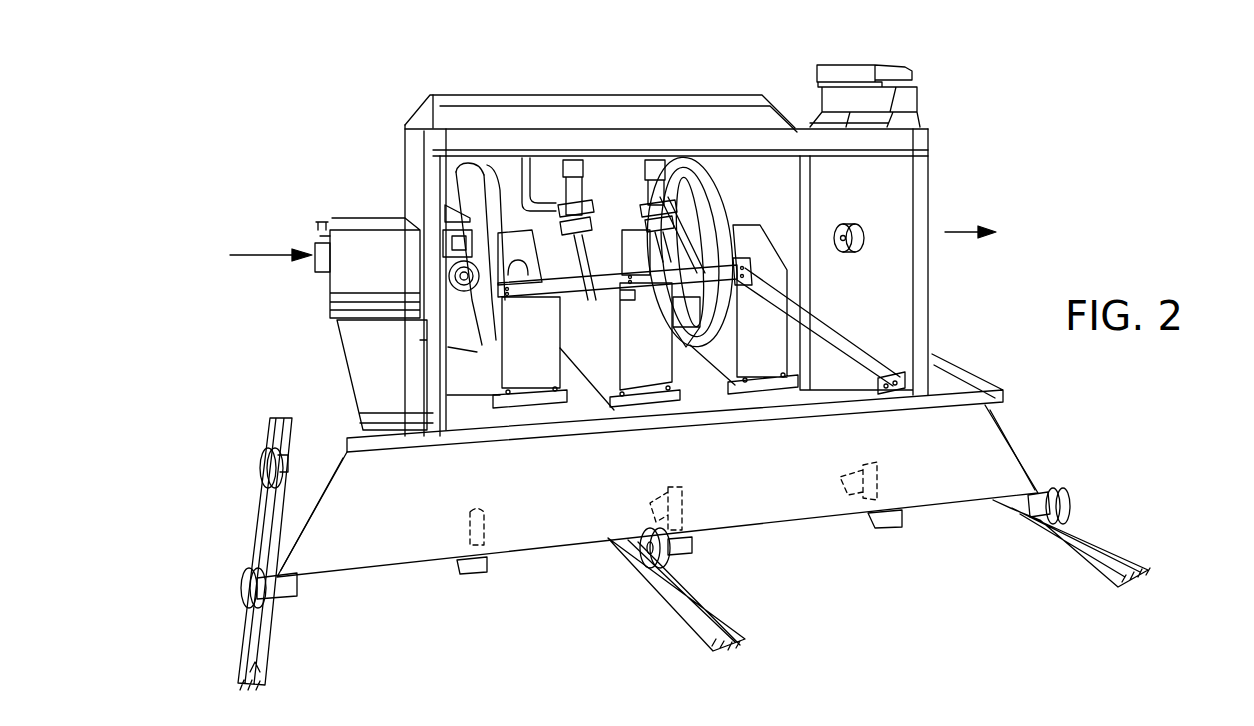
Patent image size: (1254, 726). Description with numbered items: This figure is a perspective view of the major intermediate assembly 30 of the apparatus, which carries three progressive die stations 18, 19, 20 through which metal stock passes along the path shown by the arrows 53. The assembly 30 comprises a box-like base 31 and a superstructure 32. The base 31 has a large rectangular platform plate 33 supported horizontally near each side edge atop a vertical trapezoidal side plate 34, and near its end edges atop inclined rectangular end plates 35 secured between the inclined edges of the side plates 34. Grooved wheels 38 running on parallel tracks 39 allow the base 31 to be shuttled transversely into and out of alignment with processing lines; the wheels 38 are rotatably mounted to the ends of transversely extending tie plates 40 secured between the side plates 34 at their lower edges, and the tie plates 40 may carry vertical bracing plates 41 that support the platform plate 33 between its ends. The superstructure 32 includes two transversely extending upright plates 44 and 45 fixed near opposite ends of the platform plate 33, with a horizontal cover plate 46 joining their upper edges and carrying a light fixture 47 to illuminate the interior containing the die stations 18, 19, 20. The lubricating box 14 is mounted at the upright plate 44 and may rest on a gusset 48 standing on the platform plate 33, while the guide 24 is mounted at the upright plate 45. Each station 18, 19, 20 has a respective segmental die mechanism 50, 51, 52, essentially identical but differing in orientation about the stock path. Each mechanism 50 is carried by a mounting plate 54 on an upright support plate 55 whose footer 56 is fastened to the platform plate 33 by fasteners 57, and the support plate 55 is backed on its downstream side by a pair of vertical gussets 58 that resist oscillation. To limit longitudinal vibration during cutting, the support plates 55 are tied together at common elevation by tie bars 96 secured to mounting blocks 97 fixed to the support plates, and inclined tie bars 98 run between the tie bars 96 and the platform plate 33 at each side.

The lubricating box 14 is at (345, 218).
The progressive die station 18 is at (448, 167).
The progressive die station 19 is at (551, 175).
The progressive die station 20 is at (641, 172).
The guide 24 is at (846, 252).
The assembly 30 is at (341, 80).
The base 31 is at (415, 561).
The superstructure 32 is at (406, 150).
The platform plate 33 is at (947, 377).
The side plate 34 is at (954, 497).
The end plate 35 is at (323, 423).
The grooved wheel 38 is at (263, 465).
The track 39 is at (262, 532).
The tie plate 40 is at (290, 598).
The bracing plate 41 is at (492, 514).
The upright plate 44 is at (402, 181).
The upright plate 45 is at (925, 172).
The cover plate 46 is at (797, 128).
The light fixture 47 is at (706, 96).
The gusset 48 is at (348, 337).
The segmental die mechanism 50 is at (448, 252).
The segmental die mechanism 51 is at (581, 326).
The segmental die mechanism 52 is at (692, 222).
The arrows 53 is at (268, 256).
The mounting plate 54 is at (485, 300).
The support plate 55 is at (475, 349).
The footer 56 is at (538, 398).
The fastener 57 is at (504, 390).
The gusset 58 is at (526, 180).
The tie bar 96 is at (645, 308).
The mounting block 97 is at (635, 272).
The inclined tie bar 98 is at (852, 345).